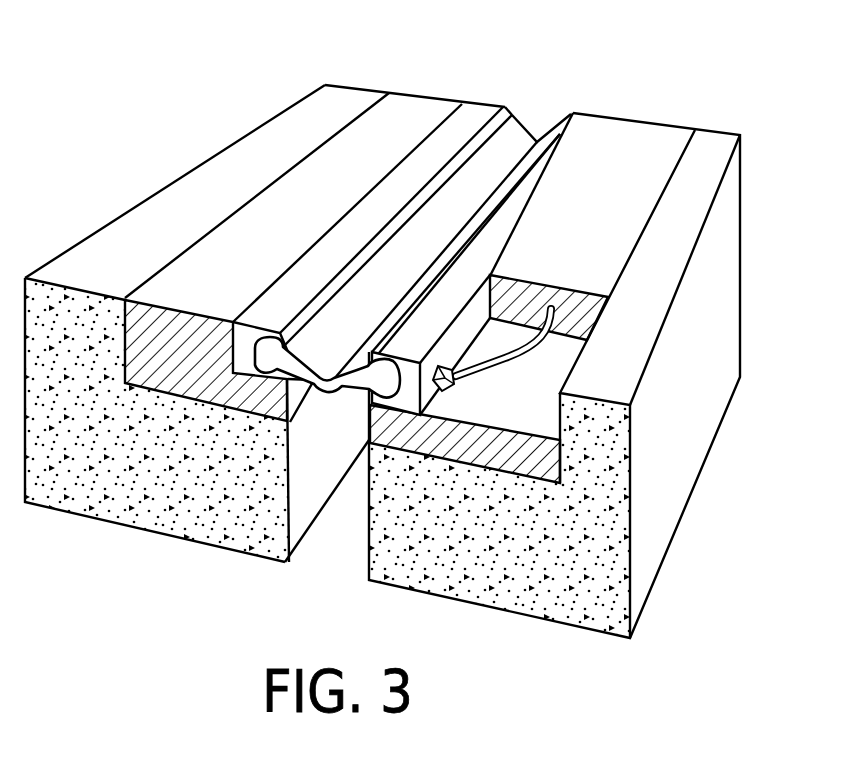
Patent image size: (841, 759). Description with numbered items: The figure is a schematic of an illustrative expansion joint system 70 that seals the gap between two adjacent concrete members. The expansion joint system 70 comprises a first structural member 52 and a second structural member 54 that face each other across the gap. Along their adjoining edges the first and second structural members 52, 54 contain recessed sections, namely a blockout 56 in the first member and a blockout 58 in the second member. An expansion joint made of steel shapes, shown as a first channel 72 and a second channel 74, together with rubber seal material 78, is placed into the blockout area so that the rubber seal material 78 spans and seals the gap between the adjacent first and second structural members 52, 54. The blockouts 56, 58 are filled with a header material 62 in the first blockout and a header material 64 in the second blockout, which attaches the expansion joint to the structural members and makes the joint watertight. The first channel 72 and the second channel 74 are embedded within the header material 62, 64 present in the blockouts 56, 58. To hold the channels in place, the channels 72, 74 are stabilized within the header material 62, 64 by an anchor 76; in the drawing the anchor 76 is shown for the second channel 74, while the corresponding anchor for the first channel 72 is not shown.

The expansion joint system 70 is at (152, 110).
The first structural member 52 is at (308, 105).
The second structural member 54 is at (720, 140).
The blockout 56 is at (175, 397).
The blockout 58 is at (460, 463).
The header material 62 is at (420, 107).
The header material 64 is at (667, 138).
The first channel 72 is at (475, 107).
The second channel 74 is at (583, 128).
The anchor 76 is at (493, 367).
The rubber seal material 78 is at (523, 128).